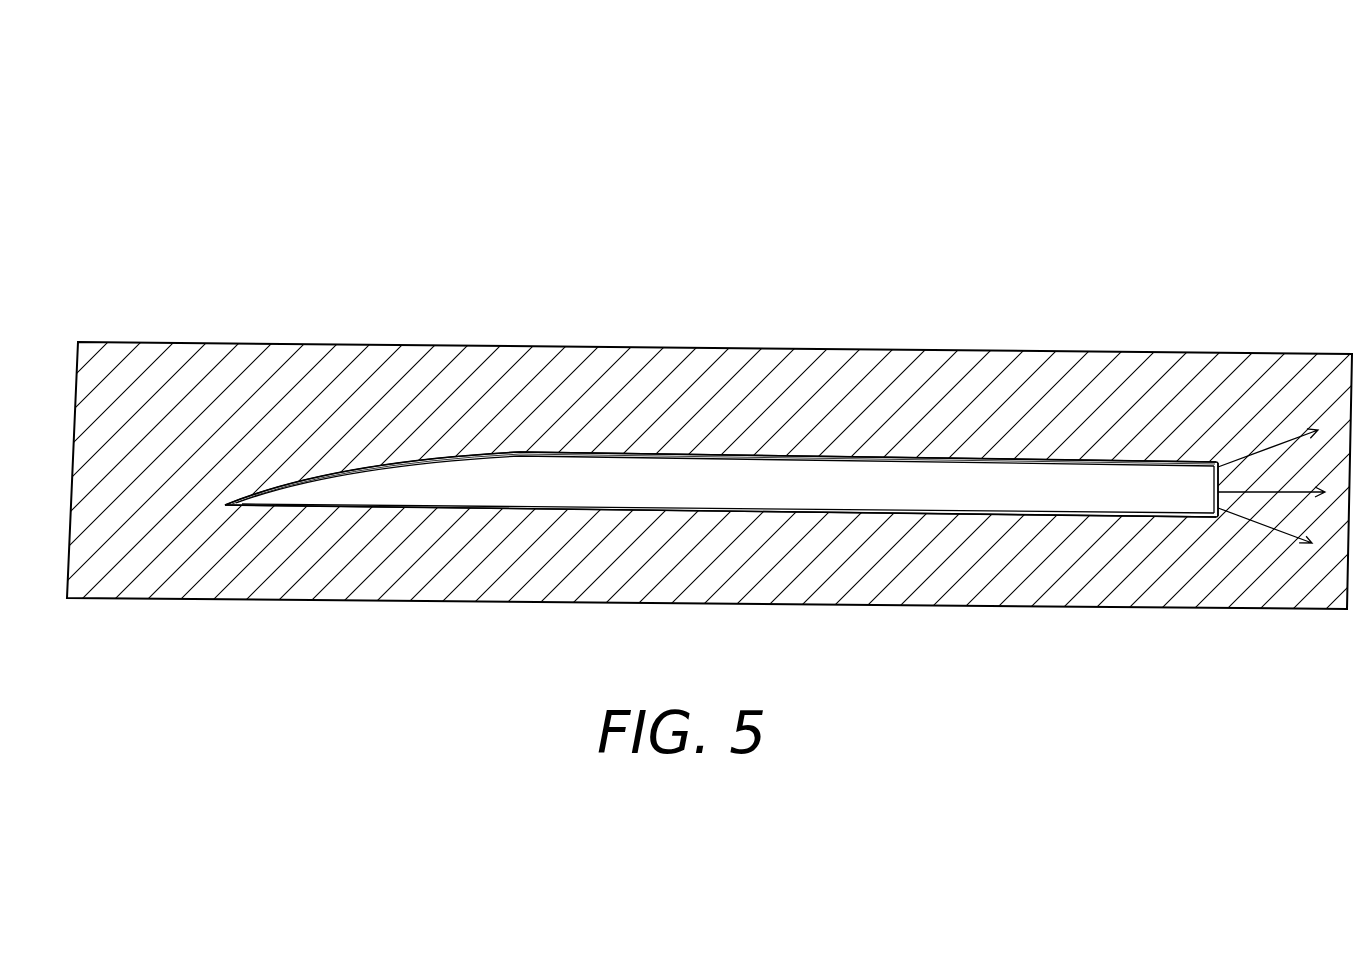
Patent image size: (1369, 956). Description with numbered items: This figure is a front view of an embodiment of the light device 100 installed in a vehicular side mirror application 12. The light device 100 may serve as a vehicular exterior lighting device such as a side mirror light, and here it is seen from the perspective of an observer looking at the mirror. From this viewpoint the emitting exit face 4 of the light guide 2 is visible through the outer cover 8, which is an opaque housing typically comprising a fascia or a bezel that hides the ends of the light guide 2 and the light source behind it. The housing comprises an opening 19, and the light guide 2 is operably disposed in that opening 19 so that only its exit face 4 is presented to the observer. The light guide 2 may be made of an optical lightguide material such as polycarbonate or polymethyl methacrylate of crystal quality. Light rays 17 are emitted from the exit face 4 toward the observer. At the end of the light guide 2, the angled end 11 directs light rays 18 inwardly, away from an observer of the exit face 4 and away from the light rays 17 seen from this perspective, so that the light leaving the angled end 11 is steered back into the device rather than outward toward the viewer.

The light device 100 is at (684, 399).
The light guide 2 is at (597, 462).
The exit face 4 is at (804, 494).
The outer cover 8 is at (495, 568).
The angled end 11 is at (1202, 483).
The side mirror application 12 is at (305, 597).
The light rays 17 is at (1100, 485).
The light rays 18 is at (1230, 510).
The opening 19 is at (948, 513).